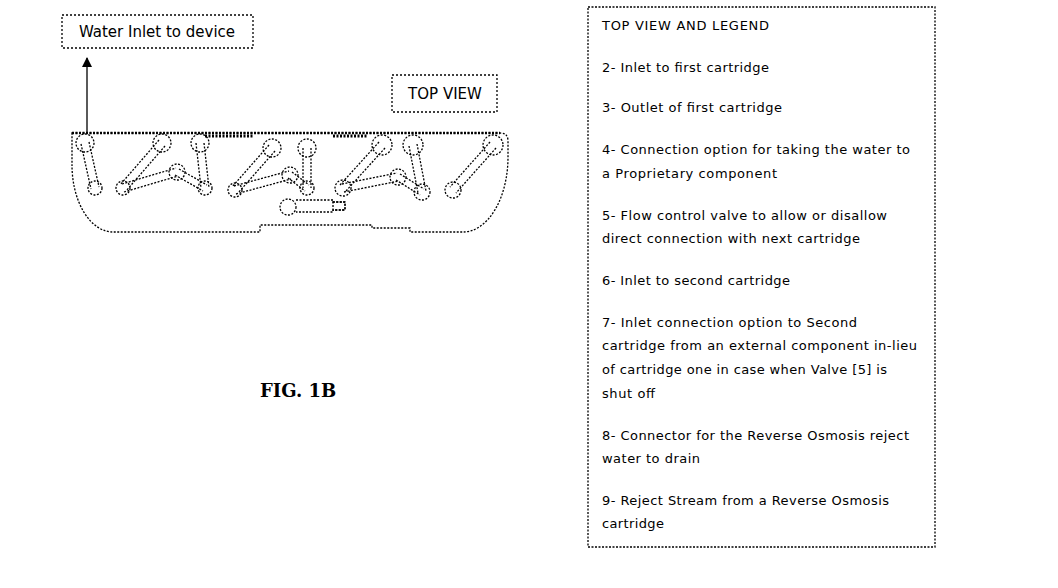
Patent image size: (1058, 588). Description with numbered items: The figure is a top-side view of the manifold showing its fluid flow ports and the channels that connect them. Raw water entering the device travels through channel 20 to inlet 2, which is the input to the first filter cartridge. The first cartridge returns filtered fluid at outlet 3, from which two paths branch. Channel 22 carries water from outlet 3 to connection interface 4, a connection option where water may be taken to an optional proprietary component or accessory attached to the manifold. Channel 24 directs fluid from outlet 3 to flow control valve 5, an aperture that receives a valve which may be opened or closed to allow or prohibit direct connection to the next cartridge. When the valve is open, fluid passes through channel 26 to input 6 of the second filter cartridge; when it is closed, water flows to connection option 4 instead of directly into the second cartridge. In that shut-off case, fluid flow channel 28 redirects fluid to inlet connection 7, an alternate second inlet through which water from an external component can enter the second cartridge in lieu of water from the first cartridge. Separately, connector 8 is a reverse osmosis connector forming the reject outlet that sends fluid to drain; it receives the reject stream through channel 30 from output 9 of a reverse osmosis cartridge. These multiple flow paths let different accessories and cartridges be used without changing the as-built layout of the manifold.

The inlet 2 is at (97, 197).
The outlet 3 is at (128, 197).
The connection interface 4 is at (162, 143).
The flow control valve 5 is at (175, 190).
The input of the second filter cartridge 6 is at (205, 197).
The inlet connection 7 is at (200, 140).
The connector 8 is at (288, 210).
The output of a reverse osmosis cartridge 9 is at (333, 225).
The channel 20 is at (82, 175).
The channel 22 is at (128, 163).
The channel 24 is at (145, 192).
The channel 26 is at (202, 182).
The fluid flow channel 28 is at (203, 155).
The channel 30 is at (323, 198).